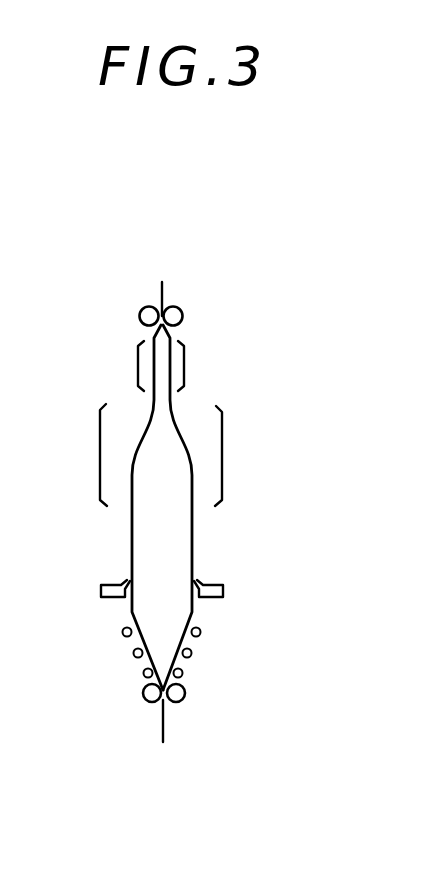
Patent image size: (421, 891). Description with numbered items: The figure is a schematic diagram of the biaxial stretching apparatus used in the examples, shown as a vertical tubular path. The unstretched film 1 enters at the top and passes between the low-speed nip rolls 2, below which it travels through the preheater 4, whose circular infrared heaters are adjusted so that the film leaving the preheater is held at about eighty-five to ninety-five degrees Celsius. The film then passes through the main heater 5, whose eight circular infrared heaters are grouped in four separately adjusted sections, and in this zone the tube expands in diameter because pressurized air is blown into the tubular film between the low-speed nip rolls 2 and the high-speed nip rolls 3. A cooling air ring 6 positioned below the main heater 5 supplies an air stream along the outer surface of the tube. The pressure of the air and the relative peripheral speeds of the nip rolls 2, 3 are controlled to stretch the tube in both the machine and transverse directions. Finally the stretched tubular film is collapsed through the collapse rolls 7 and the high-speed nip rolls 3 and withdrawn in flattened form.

The film 1 is at (165, 297).
The low-speed nip rolls 2 is at (183, 318).
The high-speed nip rolls 3 is at (185, 698).
The preheater 4 is at (185, 370).
The main heater 5 is at (224, 455).
The cooling air ring 6 is at (224, 587).
The collapse rolls 7 is at (191, 658).